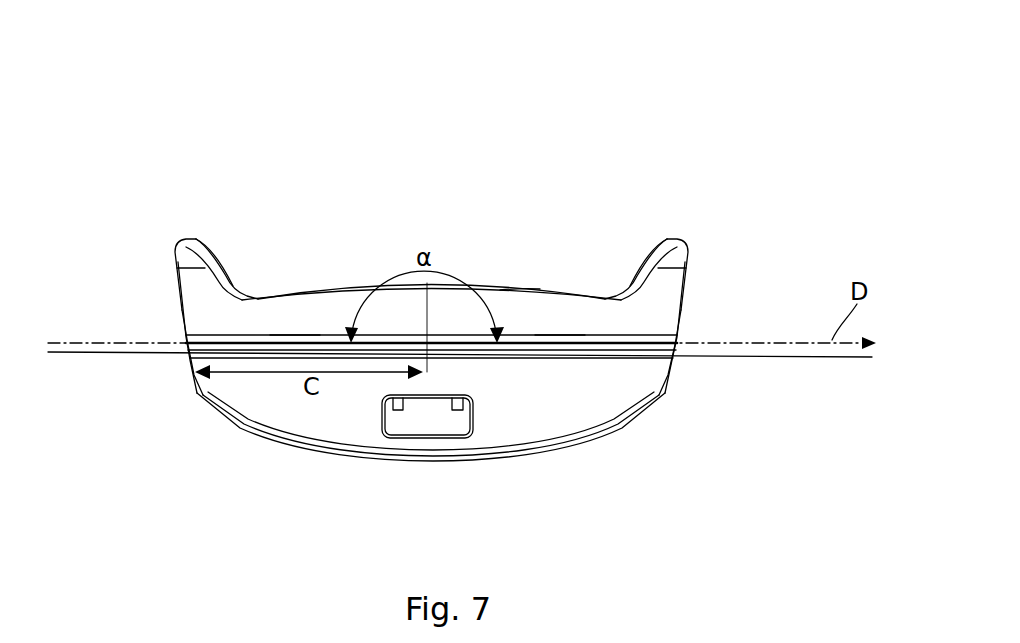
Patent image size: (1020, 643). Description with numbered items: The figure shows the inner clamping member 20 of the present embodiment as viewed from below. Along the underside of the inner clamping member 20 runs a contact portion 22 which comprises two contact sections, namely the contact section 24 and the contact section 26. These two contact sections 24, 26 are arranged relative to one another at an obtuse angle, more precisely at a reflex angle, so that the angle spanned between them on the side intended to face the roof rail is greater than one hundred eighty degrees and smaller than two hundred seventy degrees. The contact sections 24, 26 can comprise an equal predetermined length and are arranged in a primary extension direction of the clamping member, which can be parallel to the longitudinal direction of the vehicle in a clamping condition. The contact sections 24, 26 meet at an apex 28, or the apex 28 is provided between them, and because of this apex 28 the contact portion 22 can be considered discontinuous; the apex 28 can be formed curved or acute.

The inner clamping member 20 is at (522, 113).
The contact portion 22 is at (524, 302).
The contact section 24 is at (292, 327).
The contact section 26 is at (560, 323).
The apex 28 is at (432, 317).